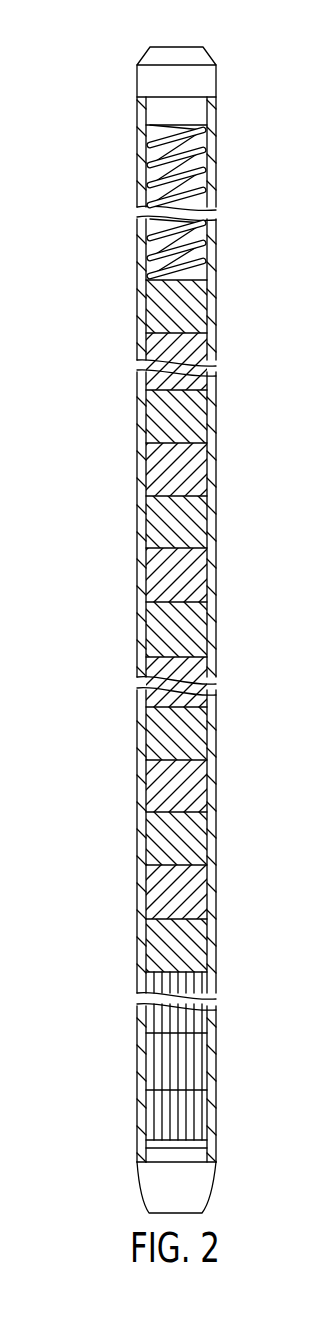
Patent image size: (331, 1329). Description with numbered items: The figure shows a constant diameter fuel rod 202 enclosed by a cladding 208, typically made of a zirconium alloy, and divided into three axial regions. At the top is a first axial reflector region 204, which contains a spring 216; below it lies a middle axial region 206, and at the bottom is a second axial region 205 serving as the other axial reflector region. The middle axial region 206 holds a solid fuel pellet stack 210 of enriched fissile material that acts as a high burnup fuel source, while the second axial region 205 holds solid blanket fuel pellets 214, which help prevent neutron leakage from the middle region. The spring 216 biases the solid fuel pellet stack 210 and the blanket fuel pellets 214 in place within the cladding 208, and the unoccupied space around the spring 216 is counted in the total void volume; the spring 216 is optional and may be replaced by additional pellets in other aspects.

The constant diameter fuel rod 202 is at (96, 85).
The first axial reflector region 204 is at (183, 201).
The second axial region 205 is at (181, 1058).
The middle axial region 206 is at (162, 624).
The cladding 208 is at (212, 389).
The solid fuel pellet stack 210 is at (202, 501).
The blanket fuel pellets 214 is at (160, 1108).
The spring 216 is at (152, 178).